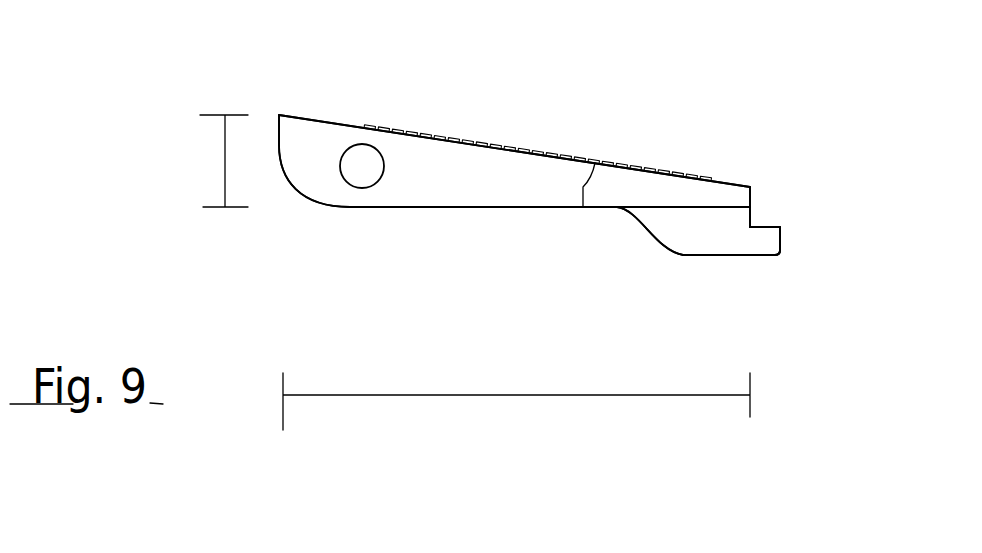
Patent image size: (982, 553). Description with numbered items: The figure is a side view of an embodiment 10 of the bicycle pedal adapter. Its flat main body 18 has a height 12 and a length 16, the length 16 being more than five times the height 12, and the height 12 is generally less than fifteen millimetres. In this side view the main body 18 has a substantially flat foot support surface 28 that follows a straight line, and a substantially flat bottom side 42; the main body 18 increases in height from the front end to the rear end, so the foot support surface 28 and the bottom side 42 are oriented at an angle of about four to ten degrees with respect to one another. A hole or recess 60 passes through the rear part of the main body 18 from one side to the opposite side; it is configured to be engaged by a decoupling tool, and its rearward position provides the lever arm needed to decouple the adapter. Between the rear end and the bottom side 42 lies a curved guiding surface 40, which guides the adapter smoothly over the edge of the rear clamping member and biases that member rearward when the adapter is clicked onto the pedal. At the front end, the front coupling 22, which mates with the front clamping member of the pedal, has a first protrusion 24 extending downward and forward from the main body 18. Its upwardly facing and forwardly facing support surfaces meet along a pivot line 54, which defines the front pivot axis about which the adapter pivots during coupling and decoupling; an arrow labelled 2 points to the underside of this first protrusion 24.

The ski binding plate / device 10 is at (269, 79).
The height 12 is at (225, 170).
The guiding surface 40 is at (300, 196).
The foot support surface 28 is at (338, 120).
The main body 18 is at (500, 190).
The hole or recess 60 is at (358, 162).
The bottom side 42 is at (487, 212).
The pivot line 54 is at (752, 227).
The first protrusion 24 is at (749, 238).
The front coupling 22 is at (718, 247).
The bottom surface of pad 2 is at (752, 281).
The length 16 is at (502, 395).